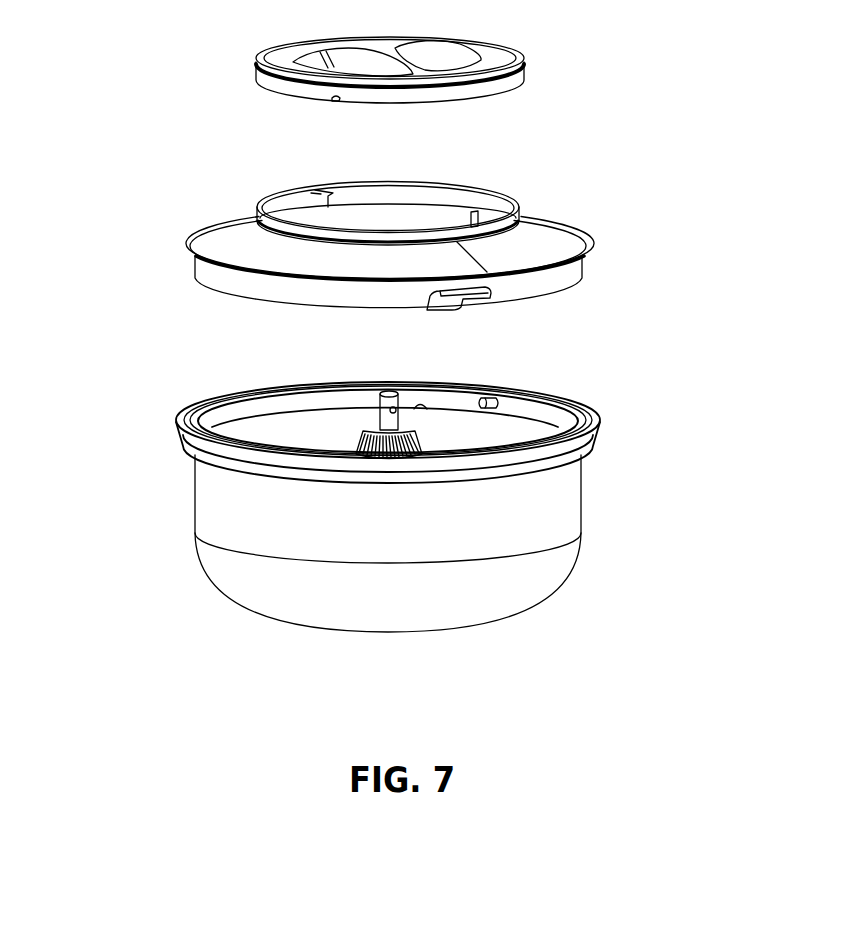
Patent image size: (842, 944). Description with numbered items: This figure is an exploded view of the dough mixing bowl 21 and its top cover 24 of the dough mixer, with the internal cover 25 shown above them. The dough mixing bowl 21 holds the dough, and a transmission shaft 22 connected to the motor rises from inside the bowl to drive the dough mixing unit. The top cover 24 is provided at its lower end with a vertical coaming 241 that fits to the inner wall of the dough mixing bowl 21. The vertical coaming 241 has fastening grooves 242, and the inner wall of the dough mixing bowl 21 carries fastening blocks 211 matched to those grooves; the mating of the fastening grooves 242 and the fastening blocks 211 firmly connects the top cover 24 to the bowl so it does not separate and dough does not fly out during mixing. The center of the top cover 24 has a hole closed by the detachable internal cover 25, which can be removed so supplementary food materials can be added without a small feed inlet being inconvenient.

The dough mixing bowl 21 is at (401, 505).
The fastening block 211 is at (500, 403).
The transmission shaft 22 is at (388, 421).
The top cover 24 is at (398, 221).
The vertical coaming 241 is at (223, 282).
The fastening groove 242 is at (497, 292).
The internal cover 25 is at (283, 65).